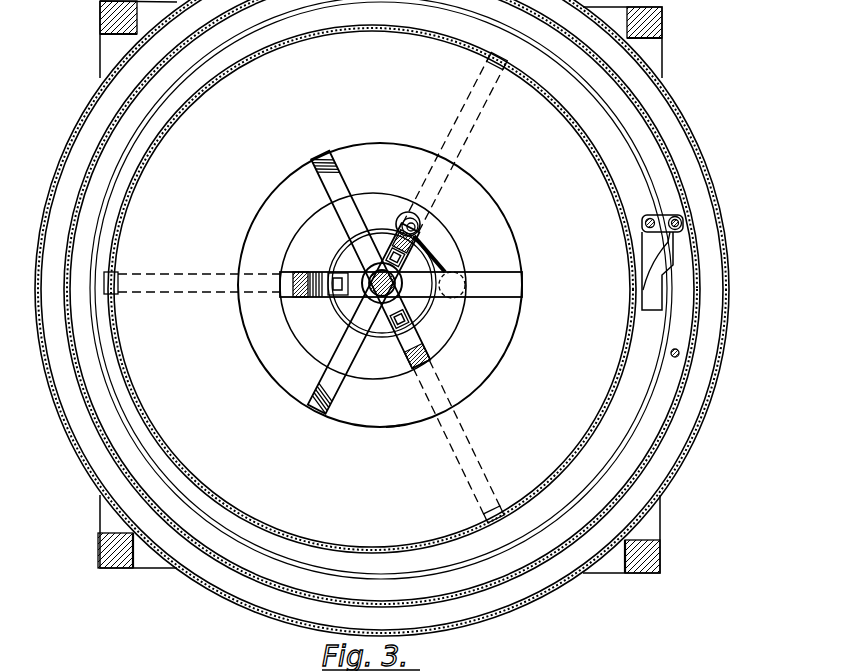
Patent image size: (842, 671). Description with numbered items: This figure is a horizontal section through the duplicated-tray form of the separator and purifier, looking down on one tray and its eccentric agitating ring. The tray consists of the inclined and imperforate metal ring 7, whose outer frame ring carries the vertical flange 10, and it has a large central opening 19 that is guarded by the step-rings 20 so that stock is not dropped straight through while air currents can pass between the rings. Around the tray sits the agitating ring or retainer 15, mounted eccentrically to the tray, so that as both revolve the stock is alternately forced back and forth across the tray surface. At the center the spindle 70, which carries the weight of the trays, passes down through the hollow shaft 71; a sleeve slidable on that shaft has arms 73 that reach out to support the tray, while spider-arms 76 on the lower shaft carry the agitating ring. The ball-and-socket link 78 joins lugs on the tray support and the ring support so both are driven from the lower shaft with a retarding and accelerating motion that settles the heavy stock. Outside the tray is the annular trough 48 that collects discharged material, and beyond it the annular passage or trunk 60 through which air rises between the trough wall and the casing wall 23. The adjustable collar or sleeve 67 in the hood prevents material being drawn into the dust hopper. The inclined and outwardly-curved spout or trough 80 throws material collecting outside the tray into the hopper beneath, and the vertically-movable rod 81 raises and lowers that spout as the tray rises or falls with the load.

The inclined and imperforate metal ring 7 is at (380, 291).
The vertical flange 10 is at (655, 384).
The agitating ring or retainer 15 is at (627, 353).
The large central opening 19 is at (395, 428).
The step-rings 20 is at (373, 304).
The outer ring 23 is at (727, 212).
The annular trough 48 is at (382, 303).
The annular passage or trunk 60 is at (384, 315).
The adjustable collar or sleeve 67 is at (377, 335).
The spindle 70 is at (362, 272).
The hollow shaft 71 is at (359, 288).
The arms 73 is at (488, 292).
The spider-arms 76 is at (394, 231).
The ball-and-socket link 78 is at (428, 249).
The inclined and outwardly-curved spout or trough 80 is at (653, 277).
The vertically-movable rod 81 is at (670, 219).